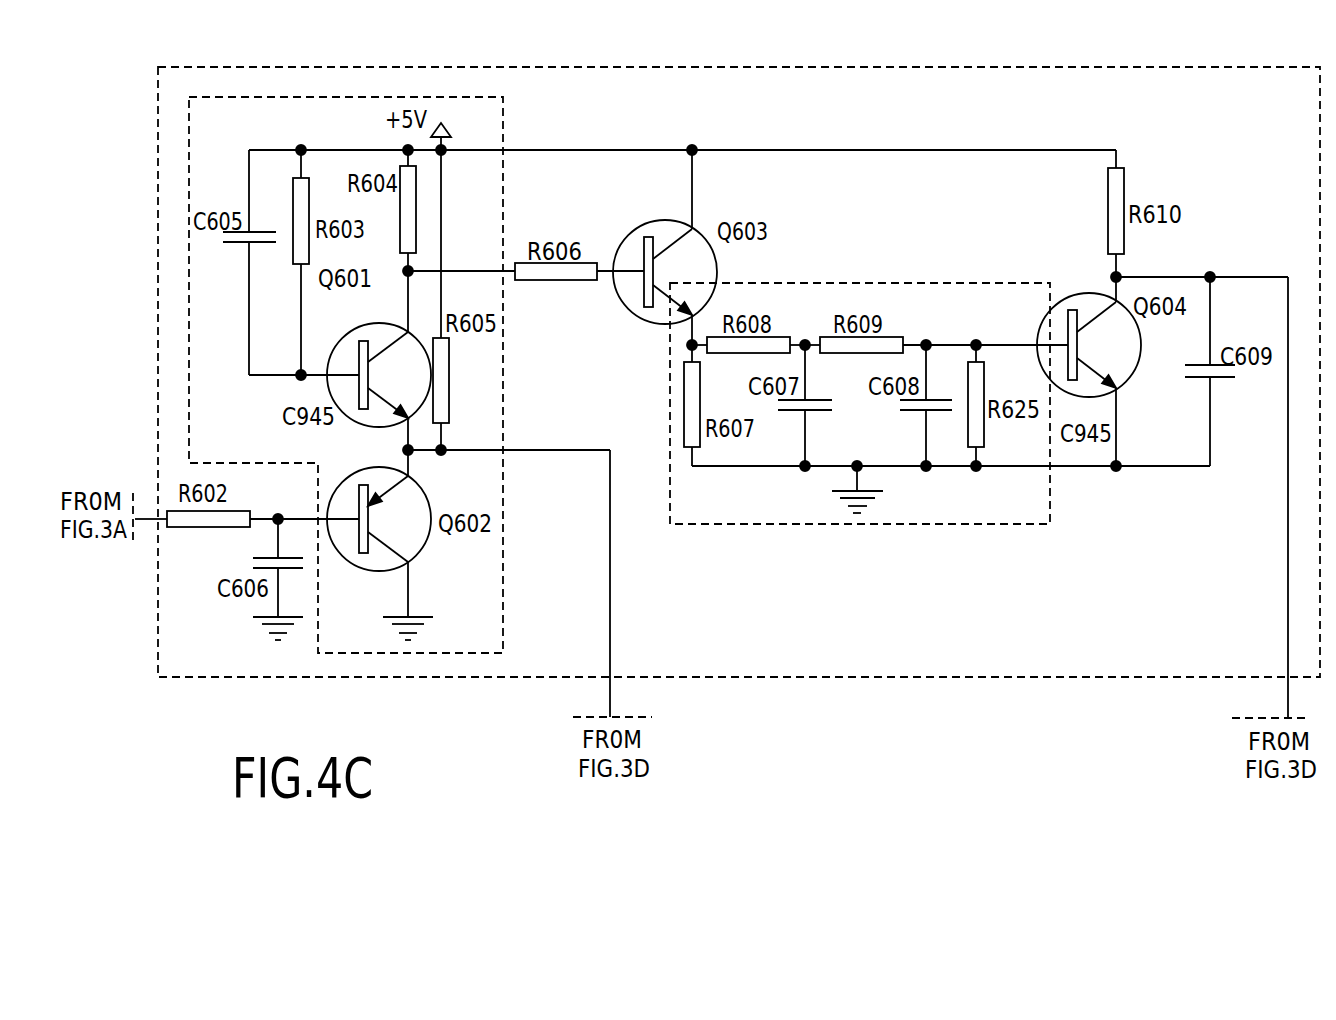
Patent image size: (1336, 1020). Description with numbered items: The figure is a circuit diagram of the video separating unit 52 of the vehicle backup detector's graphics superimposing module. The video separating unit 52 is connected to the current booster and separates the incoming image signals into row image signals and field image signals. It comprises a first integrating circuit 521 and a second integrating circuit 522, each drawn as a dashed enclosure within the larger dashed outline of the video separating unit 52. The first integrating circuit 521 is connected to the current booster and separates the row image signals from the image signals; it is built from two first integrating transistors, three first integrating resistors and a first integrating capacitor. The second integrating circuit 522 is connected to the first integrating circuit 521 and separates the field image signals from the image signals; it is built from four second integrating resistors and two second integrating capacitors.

The video separating unit 52 is at (157, 280).
The first integrating circuit 521 is at (190, 142).
The second integrating circuit 522 is at (990, 524).